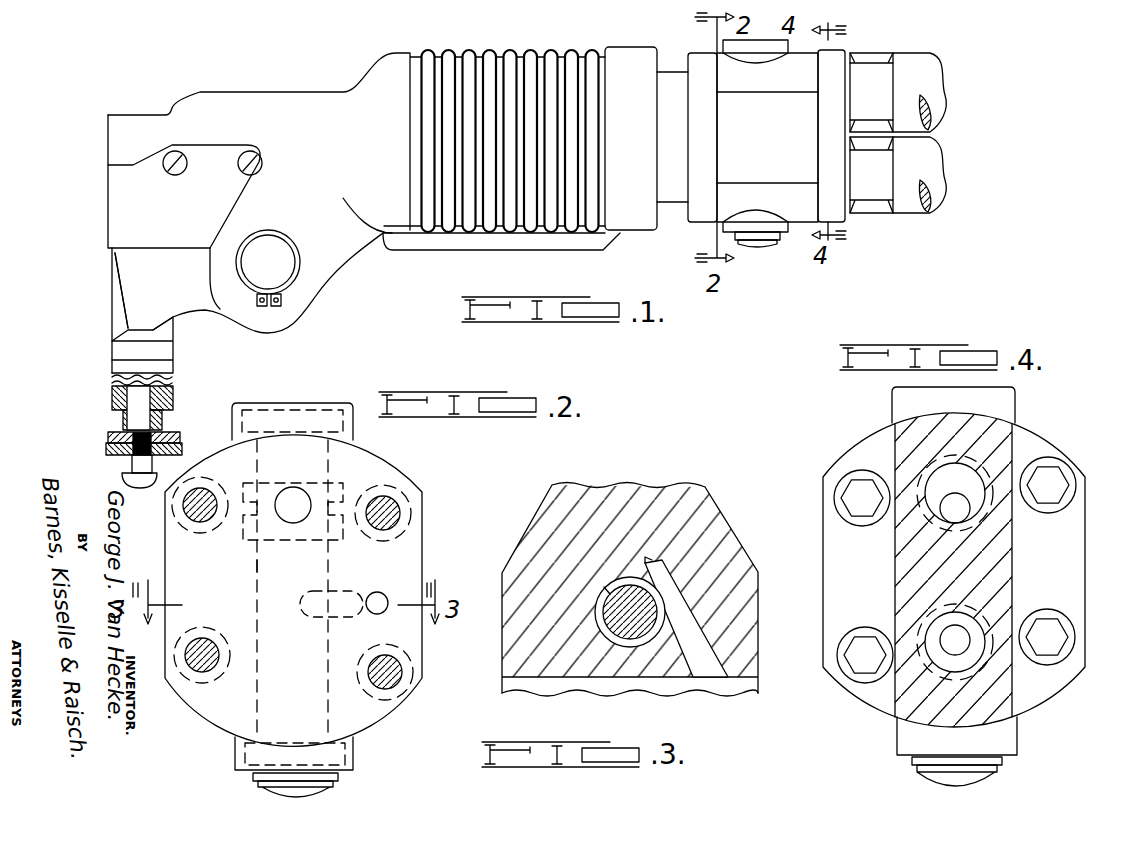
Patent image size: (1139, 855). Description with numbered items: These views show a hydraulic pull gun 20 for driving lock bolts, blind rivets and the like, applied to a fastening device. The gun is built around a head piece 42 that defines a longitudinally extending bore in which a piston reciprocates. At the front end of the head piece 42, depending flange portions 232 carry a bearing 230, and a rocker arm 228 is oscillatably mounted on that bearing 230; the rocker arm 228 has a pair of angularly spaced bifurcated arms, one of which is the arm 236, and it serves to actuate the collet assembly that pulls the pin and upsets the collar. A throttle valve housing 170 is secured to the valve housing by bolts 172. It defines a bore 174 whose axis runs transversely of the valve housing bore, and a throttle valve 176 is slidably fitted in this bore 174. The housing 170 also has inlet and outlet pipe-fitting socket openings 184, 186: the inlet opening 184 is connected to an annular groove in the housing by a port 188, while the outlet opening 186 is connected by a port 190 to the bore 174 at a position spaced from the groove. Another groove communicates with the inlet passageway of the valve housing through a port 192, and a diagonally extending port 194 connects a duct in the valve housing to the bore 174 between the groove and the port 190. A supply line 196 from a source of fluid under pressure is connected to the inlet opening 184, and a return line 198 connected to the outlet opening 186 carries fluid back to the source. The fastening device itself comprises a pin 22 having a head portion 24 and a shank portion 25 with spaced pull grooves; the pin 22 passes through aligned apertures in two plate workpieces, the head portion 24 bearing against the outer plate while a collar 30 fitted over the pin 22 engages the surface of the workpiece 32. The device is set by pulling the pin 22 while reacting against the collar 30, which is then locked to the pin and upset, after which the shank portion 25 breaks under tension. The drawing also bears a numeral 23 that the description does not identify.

In FIG. 1, the hydraulic pull gun 20 is at (308, 90).
In FIG. 1, the head piece 42 is at (491, 53).
In FIG. 1, the throttle valve housing 170 is at (790, 80).
In FIG. 3, the throttle valve housing 170 is at (712, 510).
In FIG. 4, the throttle valve housing 170 is at (870, 449).
In FIG. 2, the bolts 172 is at (383, 672).
In FIG. 4, the bolts 172 is at (1050, 483).
In FIG. 2, the bore 174 is at (256, 568).
In FIG. 3, the bore 174 is at (610, 588).
In FIG. 1, the throttle valve 176 is at (768, 250).
In FIG. 2, the throttle valve 176 is at (270, 788).
In FIG. 3, the throttle valve 176 is at (604, 603).
In FIG. 4, the throttle valve 176 is at (940, 779).
In FIG. 4, the inlet pipe-fitting socket opening 184 is at (963, 450).
In FIG. 4, the outlet pipe-fitting socket opening 186 is at (958, 612).
In FIG. 4, the port 188 is at (945, 516).
In FIG. 4, the port 190 is at (948, 636).
In FIG. 2, the port 192 is at (288, 498).
In FIG. 2, the diagonally extending port 194 is at (353, 594).
In FIG. 3, the diagonally extending port 194 is at (716, 600).
In FIG. 1, the supply line 196 is at (920, 67).
In FIG. 1, the return line 198 is at (920, 183).
In FIG. 1, the rocker arm 228 is at (206, 316).
In FIG. 1, the bearing 230 is at (320, 240).
In FIG. 1, the depending flange portions 232 is at (330, 272).
In FIG. 1, the bifurcated arm 236 is at (140, 269).
In FIG. 1, the pin 22 is at (118, 421).
In FIG. 1, the washer 23 is at (107, 450).
In FIG. 1, the head portion 24 is at (128, 478).
In FIG. 1, the shank portion 25 is at (165, 422).
In FIG. 1, the collar 30 is at (172, 403).
In FIG. 1, the workpiece 32 is at (112, 438).